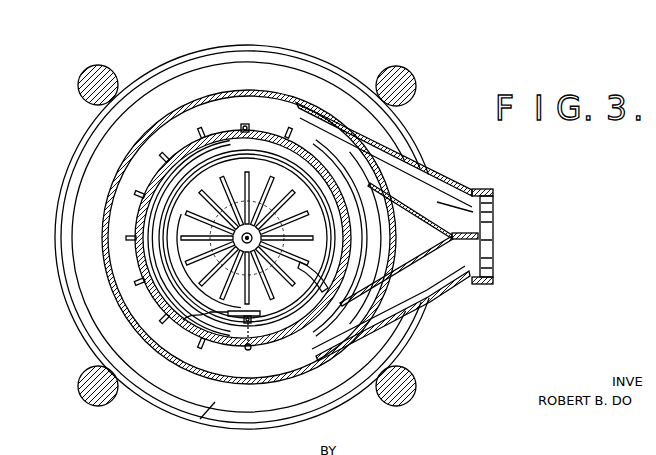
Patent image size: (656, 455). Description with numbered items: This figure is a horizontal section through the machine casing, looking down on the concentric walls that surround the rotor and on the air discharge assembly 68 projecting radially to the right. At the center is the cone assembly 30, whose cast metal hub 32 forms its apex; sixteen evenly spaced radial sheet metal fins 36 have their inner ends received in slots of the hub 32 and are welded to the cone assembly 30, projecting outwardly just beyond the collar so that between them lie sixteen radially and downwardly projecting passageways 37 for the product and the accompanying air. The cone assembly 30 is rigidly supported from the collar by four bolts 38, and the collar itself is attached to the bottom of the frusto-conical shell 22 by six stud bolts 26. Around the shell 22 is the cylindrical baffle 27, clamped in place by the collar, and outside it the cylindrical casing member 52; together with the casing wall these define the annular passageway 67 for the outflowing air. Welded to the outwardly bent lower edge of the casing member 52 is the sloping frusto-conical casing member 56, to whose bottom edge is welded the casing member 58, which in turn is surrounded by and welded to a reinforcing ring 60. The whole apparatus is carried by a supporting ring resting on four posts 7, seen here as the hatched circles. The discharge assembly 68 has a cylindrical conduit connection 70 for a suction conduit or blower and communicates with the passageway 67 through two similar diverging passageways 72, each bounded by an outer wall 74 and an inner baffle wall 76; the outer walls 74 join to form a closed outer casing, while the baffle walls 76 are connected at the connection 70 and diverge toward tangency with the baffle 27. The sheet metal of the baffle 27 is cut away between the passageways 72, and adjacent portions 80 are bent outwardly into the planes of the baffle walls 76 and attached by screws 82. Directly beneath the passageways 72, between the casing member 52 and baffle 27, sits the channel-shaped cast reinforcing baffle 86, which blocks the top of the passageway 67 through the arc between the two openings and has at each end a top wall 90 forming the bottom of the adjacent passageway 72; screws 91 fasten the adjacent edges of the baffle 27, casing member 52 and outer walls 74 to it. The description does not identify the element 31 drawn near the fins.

The posts 7 is at (116, 70).
The frusto-conical shell 22 is at (206, 249).
The stud bolts 26 is at (238, 316).
The cylindrical baffle 27 is at (140, 212).
The cone assembly 30 is at (246, 124).
The blade ring 31 is at (205, 268).
The hub 32 is at (216, 262).
The fins 36 is at (253, 236).
The passageways 37 is at (242, 381).
The bolts 38 is at (136, 240).
The casing member 52 is at (127, 166).
The frusto-conical casing member 56 is at (304, 71).
The casing member 58 is at (353, 80).
The reinforcing ring 60 is at (279, 46).
The annular passageway 67 is at (202, 418).
The air discharge assembly 68 is at (416, 248).
The cylindrical conduit connection 70 is at (494, 222).
The diverging passageways 72 is at (488, 183).
The outer wall 74 is at (450, 143).
The inner baffle wall 76 is at (420, 216).
The portions 80 is at (366, 190).
The screws 82 is at (388, 196).
The reinforcing baffle 86 is at (296, 268).
The top wall 90 is at (395, 145).
The screws 91 is at (402, 270).